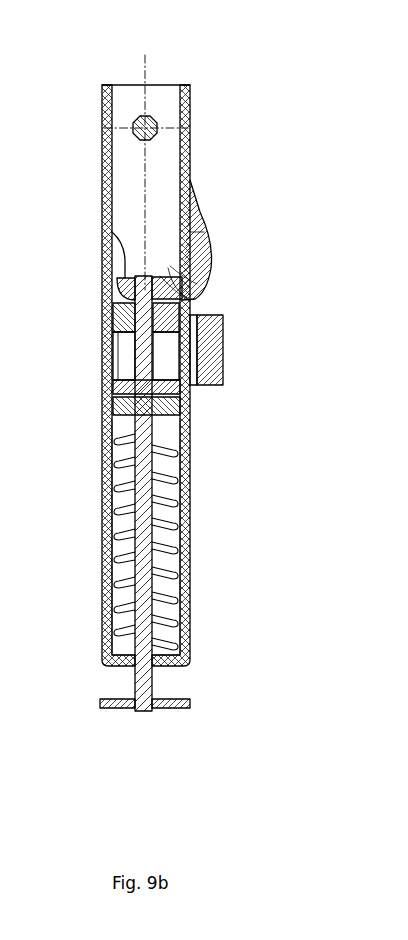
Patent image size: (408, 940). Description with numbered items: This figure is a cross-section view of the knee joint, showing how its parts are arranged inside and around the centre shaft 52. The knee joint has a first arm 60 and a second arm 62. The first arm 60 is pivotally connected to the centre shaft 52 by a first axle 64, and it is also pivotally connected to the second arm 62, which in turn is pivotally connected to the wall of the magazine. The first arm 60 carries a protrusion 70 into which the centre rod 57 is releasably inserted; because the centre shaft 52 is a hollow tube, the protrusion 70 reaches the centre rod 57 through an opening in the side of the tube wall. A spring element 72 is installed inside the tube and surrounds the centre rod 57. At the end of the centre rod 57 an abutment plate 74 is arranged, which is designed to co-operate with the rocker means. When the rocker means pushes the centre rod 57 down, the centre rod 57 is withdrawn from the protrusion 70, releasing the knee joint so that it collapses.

The centre shaft 52 is at (190, 515).
The centre rod 57 is at (101, 578).
The first arm 60 is at (214, 252).
The second arm 62 is at (224, 343).
The first axle 64 is at (152, 115).
The protrusion 70 is at (110, 240).
The spring element 72 is at (102, 498).
The abutment plate 74 is at (175, 700).